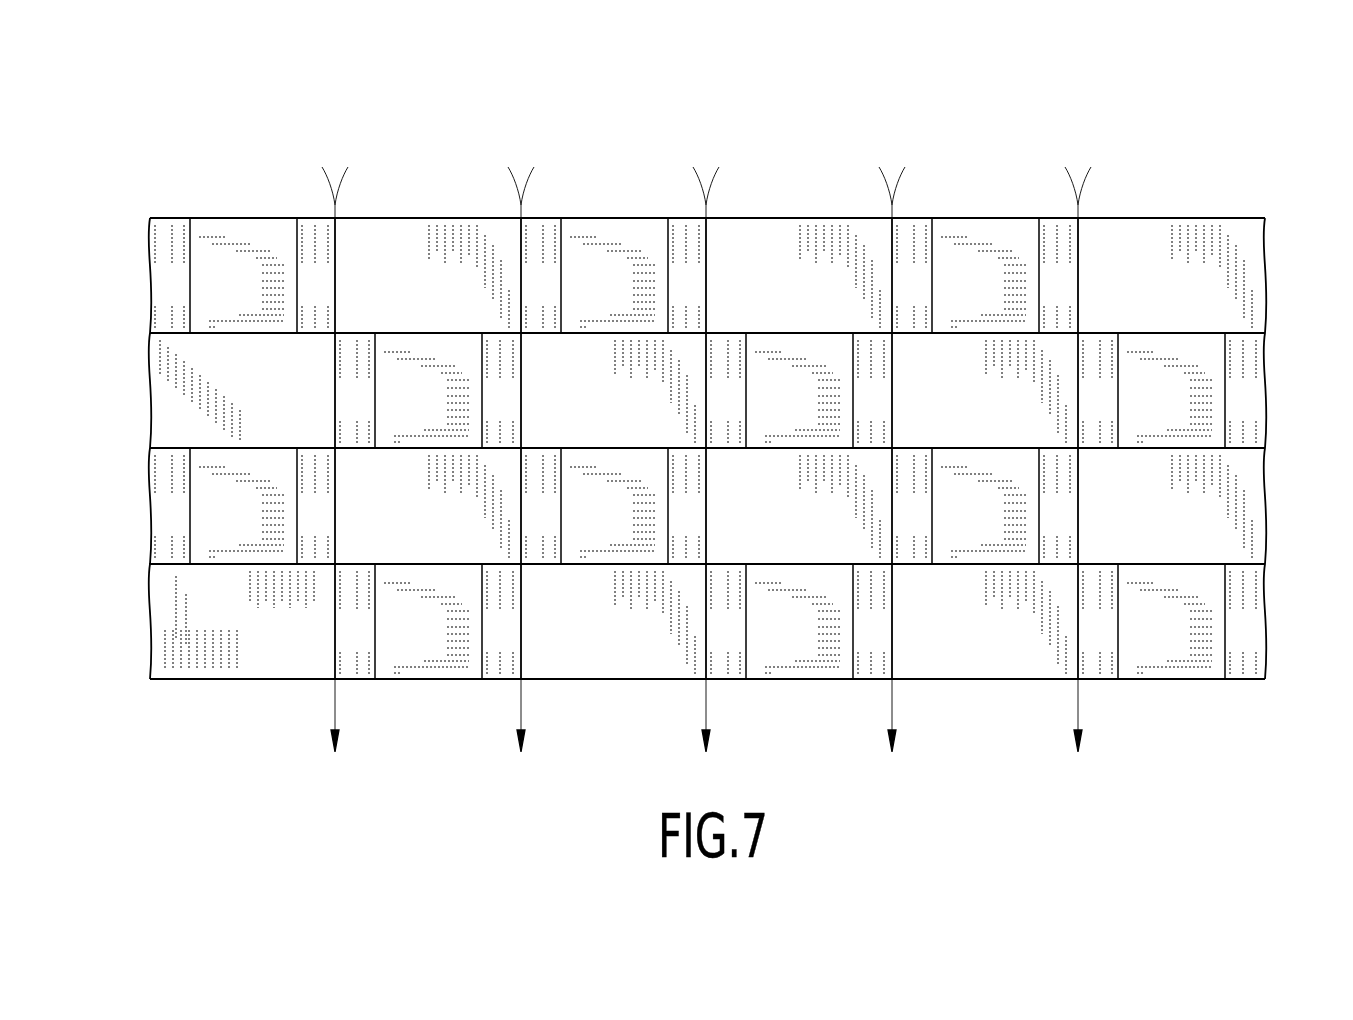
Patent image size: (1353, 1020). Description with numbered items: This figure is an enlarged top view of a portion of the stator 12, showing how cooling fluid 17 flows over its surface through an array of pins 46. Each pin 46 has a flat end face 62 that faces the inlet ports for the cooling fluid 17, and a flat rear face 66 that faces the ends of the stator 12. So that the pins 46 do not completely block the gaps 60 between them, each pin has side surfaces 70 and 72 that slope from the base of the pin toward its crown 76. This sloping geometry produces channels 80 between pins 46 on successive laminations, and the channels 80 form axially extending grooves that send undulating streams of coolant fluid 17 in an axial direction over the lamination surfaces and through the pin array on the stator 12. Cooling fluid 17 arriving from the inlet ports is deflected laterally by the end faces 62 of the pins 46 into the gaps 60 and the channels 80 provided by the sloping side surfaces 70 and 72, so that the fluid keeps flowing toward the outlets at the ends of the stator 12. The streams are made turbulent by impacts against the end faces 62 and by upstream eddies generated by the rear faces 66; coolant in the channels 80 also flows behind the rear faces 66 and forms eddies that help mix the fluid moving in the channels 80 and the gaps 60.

The stator 12 is at (136, 143).
The cooling fluid 17 is at (335, 205).
The pin 46 is at (1181, 647).
The gap 60 is at (1019, 646).
The flat end face 62 is at (248, 218).
The flat rear face 66 is at (406, 450).
The side surface 70 is at (1258, 647).
The side surface 72 is at (1113, 647).
The crown 76 is at (283, 228).
The channel 80 is at (335, 363).